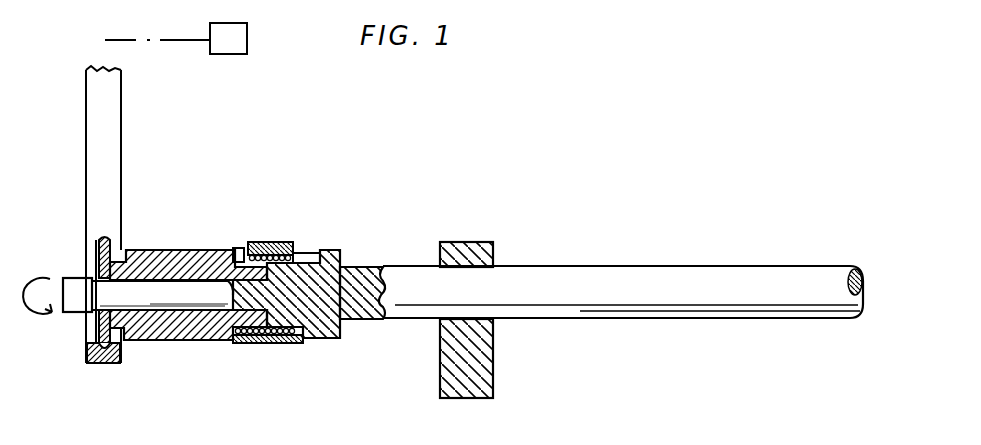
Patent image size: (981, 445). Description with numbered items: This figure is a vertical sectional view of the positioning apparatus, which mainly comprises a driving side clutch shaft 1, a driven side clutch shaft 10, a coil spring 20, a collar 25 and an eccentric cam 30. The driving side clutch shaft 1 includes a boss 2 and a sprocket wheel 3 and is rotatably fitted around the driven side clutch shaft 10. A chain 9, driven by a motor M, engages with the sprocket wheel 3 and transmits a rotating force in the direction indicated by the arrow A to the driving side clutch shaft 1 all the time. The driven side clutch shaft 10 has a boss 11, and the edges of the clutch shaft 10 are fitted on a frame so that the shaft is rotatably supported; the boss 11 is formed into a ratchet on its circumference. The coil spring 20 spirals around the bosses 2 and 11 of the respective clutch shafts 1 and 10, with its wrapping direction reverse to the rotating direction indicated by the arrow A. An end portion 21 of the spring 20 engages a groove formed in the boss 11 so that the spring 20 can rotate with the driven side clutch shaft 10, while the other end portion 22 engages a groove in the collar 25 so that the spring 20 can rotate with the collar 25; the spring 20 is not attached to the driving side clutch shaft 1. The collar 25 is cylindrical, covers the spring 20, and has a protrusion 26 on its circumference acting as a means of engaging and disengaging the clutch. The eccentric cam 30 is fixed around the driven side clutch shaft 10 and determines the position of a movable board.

The driving side clutch shaft 1 is at (155, 341).
The boss 2 is at (173, 250).
The sprocket wheel 3 is at (96, 240).
The chain 9 is at (88, 135).
The driven side clutch shaft 10 is at (370, 322).
The boss 11 is at (318, 343).
The coil spring 20 is at (255, 343).
The end portion 21 is at (317, 252).
The other end portion 22 is at (241, 248).
The collar 25 is at (302, 252).
The protrusion 26 is at (267, 245).
The eccentric cam 30 is at (493, 372).
The motor M is at (228, 54).
The arrow A is at (37, 281).